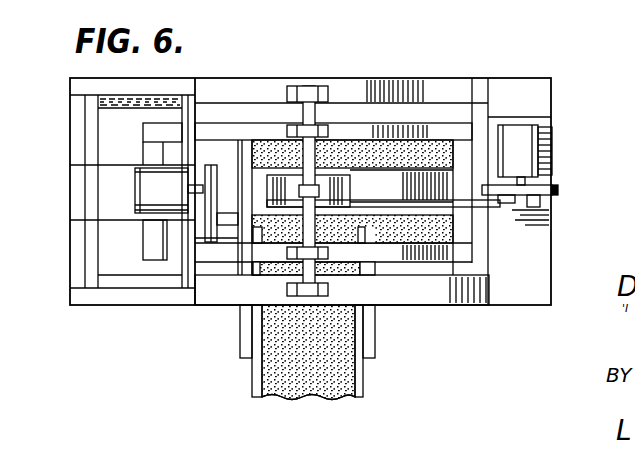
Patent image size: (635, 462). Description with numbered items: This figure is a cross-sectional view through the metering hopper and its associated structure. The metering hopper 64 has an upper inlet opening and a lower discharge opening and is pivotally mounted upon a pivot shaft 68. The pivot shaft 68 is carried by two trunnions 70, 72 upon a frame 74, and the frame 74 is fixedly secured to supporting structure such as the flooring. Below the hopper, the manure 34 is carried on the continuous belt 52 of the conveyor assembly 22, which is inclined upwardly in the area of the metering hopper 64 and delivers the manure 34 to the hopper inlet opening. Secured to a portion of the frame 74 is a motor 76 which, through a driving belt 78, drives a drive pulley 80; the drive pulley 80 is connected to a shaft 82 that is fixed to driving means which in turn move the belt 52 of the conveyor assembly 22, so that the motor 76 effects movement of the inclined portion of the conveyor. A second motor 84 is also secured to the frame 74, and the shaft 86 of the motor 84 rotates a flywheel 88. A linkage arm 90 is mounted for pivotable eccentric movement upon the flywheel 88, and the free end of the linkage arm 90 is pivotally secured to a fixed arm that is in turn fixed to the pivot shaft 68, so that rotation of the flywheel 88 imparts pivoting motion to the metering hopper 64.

The conveyor assembly 22 is at (345, 320).
The manure 34 is at (305, 378).
The continuous belt 52 is at (365, 378).
The metering hopper 64 is at (431, 143).
The pivot shaft 68 is at (300, 268).
The trunnion 70 is at (303, 293).
The trunnion 72 is at (308, 88).
The frame 74 is at (458, 305).
The motor 76 is at (140, 187).
The driving belt 78 is at (209, 165).
The drive pulley 80 is at (203, 237).
The shaft 82 is at (227, 220).
The motor 84 is at (543, 132).
The shaft 86 is at (537, 178).
The flywheel 88 is at (558, 193).
The linkage arm 90 is at (475, 207).